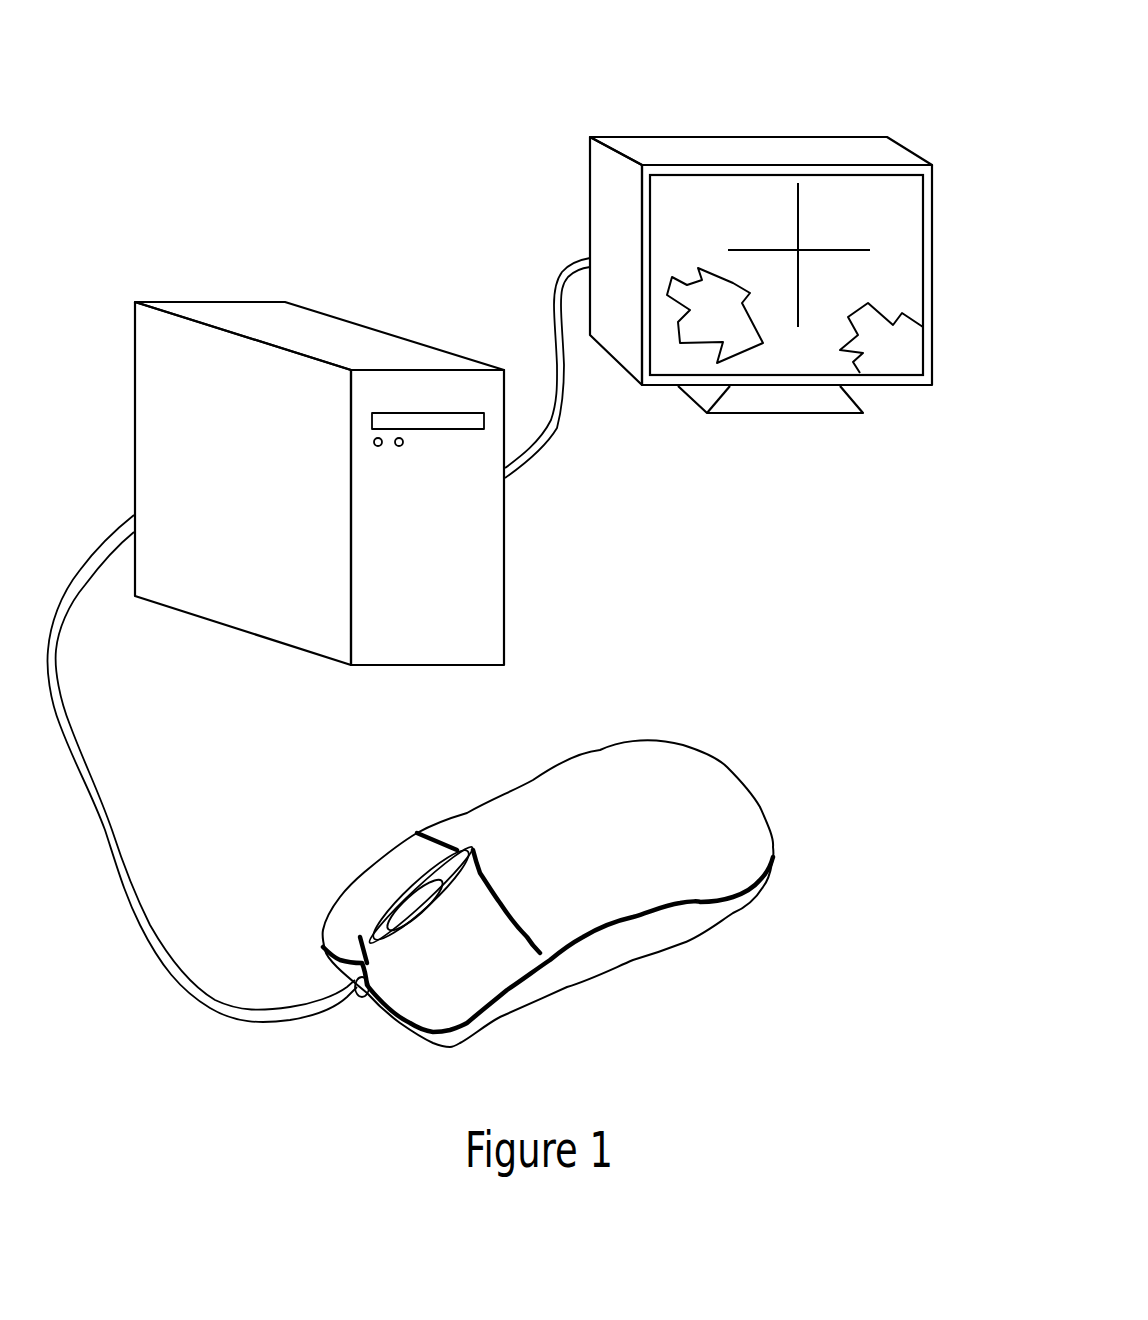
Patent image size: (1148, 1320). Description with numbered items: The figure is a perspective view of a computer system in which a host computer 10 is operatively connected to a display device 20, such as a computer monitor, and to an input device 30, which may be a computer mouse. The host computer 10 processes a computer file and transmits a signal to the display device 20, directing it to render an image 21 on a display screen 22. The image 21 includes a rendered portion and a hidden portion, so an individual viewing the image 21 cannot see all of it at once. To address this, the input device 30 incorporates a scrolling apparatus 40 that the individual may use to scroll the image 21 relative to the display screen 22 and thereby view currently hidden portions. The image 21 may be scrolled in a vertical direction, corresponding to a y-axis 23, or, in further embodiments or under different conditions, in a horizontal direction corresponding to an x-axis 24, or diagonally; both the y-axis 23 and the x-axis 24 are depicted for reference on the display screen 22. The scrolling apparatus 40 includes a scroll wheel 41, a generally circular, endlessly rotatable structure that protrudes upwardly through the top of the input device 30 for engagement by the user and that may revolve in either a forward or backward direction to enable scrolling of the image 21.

The host computer 10 is at (512, 569).
The display device 20 is at (761, 240).
The image 21 is at (700, 280).
The display screen 22 is at (892, 183).
The y-axis 23 is at (802, 215).
The x-axis 24 is at (813, 253).
The input device 30 is at (546, 893).
The scrolling apparatus 40 is at (384, 897).
The scroll wheel 41 is at (415, 910).